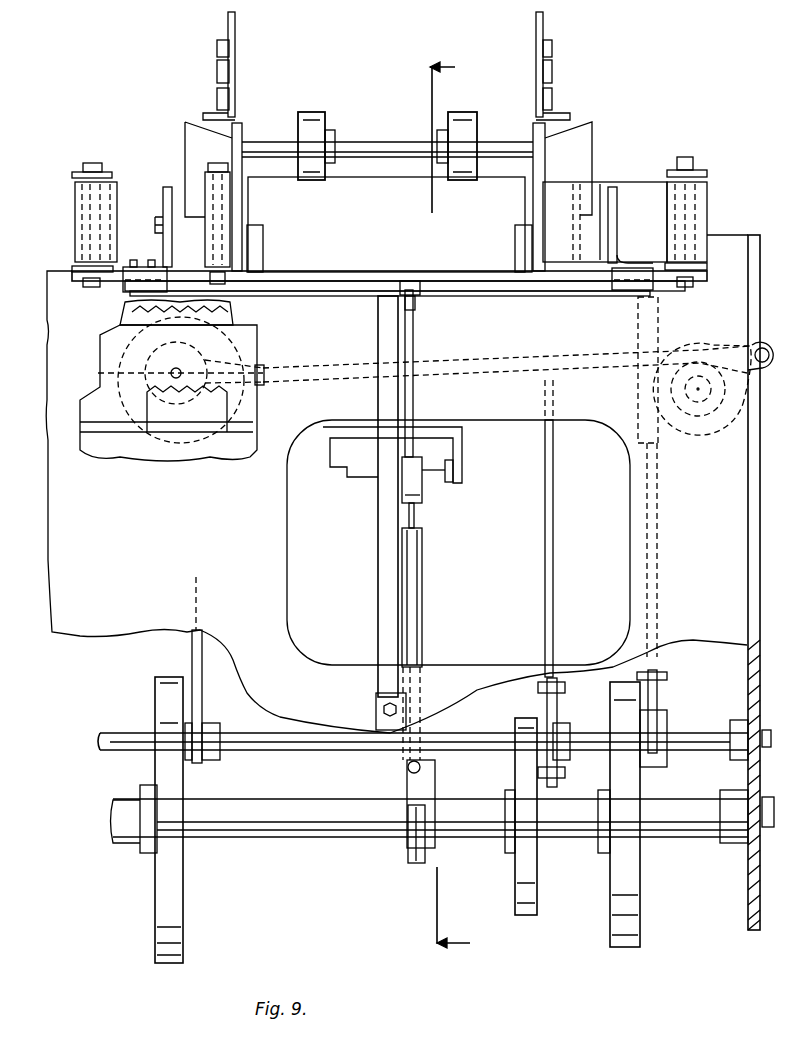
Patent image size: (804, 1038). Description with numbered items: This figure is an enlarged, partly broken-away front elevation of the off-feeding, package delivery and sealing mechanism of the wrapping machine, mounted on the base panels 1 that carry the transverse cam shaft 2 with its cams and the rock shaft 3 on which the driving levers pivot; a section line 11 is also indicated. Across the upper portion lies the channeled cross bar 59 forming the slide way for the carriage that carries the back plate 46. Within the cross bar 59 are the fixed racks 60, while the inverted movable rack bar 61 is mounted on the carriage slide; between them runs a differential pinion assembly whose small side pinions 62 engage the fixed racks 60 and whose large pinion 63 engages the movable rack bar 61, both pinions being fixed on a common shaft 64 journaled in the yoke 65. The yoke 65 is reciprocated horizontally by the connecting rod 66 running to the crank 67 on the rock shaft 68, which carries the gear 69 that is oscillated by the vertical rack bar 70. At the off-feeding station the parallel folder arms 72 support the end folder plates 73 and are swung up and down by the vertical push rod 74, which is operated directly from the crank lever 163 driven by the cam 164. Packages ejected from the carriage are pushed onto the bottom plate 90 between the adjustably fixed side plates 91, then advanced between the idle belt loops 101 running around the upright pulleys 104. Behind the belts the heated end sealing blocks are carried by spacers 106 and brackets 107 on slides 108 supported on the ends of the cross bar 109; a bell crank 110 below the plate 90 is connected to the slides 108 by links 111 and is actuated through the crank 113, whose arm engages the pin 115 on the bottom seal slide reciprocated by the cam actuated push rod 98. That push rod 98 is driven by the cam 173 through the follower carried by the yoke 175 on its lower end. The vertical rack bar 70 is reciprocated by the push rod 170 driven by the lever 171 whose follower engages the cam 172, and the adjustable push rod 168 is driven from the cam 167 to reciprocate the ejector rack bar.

The base or body panels 1 is at (764, 548).
The cam shaft 2 is at (280, 815).
The rock shaft 3 is at (317, 745).
The section line 11 is at (464, 505).
The back plate 46 is at (382, 178).
The channeled cross bar 59 is at (90, 412).
The fixed racks 60 is at (176, 405).
The movable rack bar 61 is at (135, 310).
The side gears or pinions 62 is at (120, 342).
The large pinion 63 is at (230, 400).
The common shaft 64 is at (118, 373).
The yoke 65 is at (258, 365).
The connecting rod 66 is at (510, 358).
The crank 67 is at (766, 365).
The rock shaft 68 is at (697, 405).
The gear 69 is at (713, 432).
The vertical rack bar 70 is at (636, 388).
The folder arms 72 is at (218, 78).
The end folder plates 73 is at (228, 32).
The vertical push rod 74 is at (545, 580).
The bottom plate 90 is at (340, 272).
The side plates 91 is at (228, 138).
The push rod 98 is at (415, 610).
The belt loops 101 is at (115, 180).
The upright pulleys 104 is at (78, 175).
The spacers 106 is at (185, 220).
The brackets 107 is at (165, 200).
The slides 108 is at (148, 270).
The cross bar 109 is at (532, 283).
The bell crank 110 is at (406, 285).
The links 111 is at (450, 286).
The crank 113 is at (413, 356).
The pin 115 is at (436, 476).
The crank lever 163 is at (557, 705).
The cam 164 is at (530, 897).
The cam 167 is at (162, 898).
The push rod 168 is at (192, 655).
The push rod 170 is at (647, 562).
The lever 171 is at (657, 697).
The cam 172 is at (615, 935).
The cam 173 is at (410, 860).
The yoke 175 is at (407, 840).